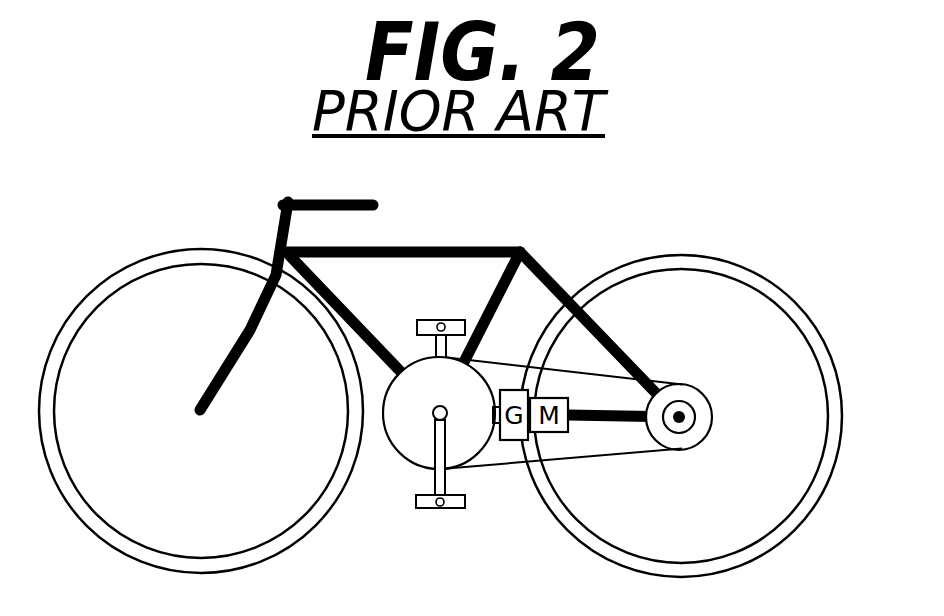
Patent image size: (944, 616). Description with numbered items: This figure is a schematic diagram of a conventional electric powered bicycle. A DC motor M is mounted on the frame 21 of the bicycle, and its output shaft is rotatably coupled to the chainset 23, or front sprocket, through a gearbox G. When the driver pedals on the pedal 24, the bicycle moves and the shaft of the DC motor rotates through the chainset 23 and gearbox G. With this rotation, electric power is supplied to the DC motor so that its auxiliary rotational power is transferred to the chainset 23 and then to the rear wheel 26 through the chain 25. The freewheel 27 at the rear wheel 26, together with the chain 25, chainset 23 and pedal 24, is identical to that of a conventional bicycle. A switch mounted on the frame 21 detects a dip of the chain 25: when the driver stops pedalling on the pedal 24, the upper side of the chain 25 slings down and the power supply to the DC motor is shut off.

The frame 21 is at (620, 340).
The chainset 23 is at (402, 447).
The pedal 24 is at (457, 507).
The chain 25 is at (637, 457).
The rear wheel 26 is at (823, 472).
The freewheel 27 is at (702, 418).